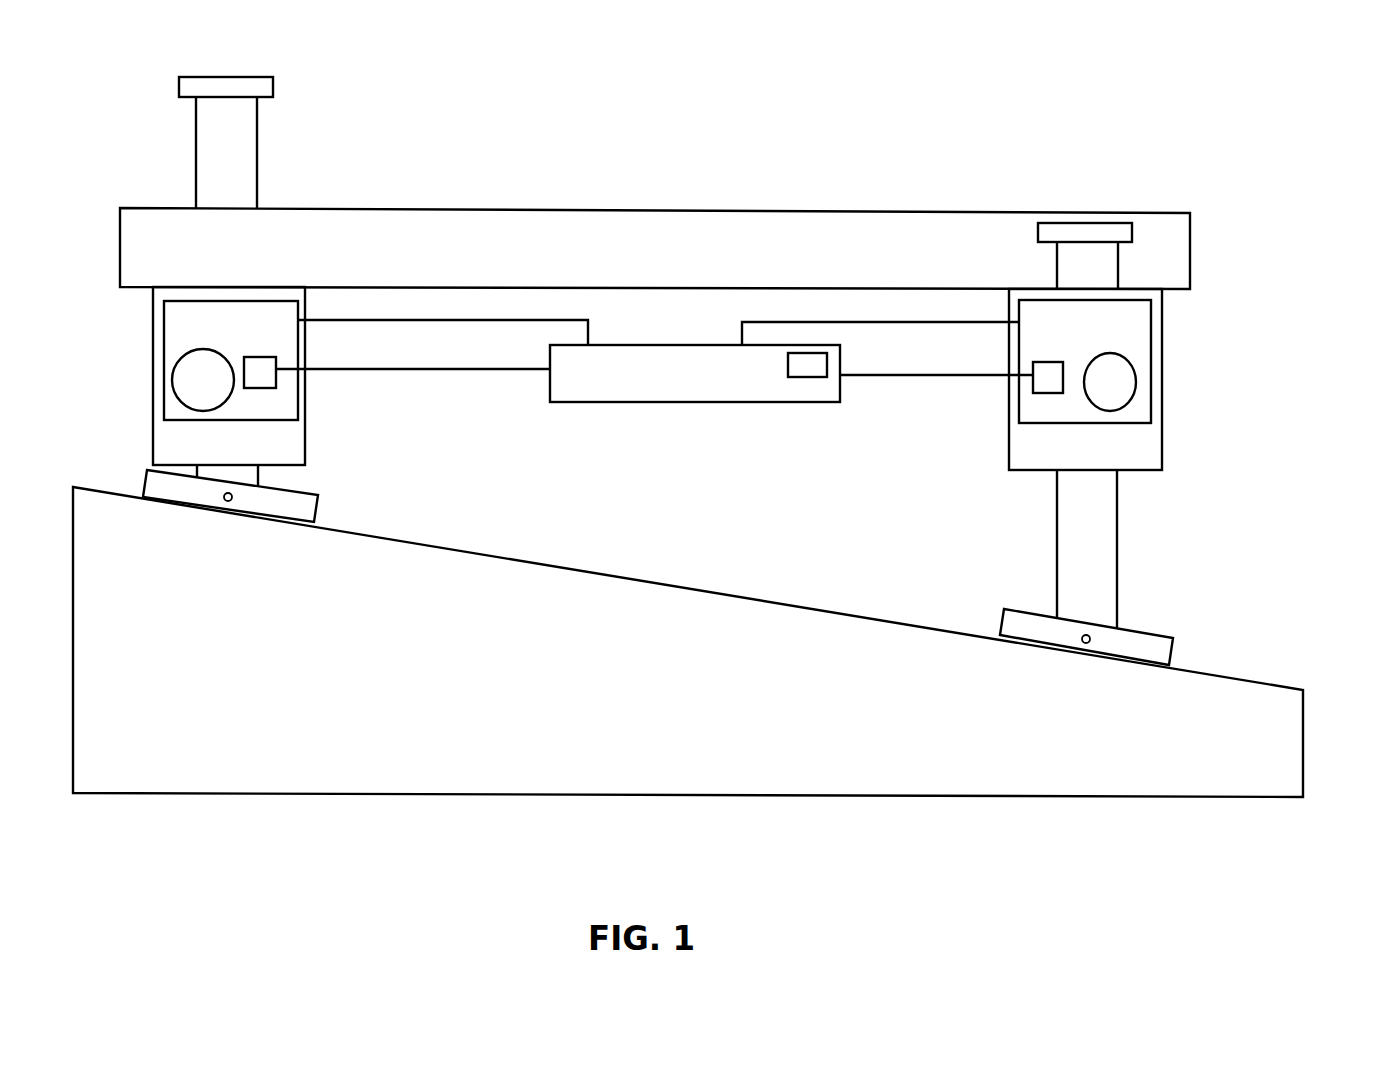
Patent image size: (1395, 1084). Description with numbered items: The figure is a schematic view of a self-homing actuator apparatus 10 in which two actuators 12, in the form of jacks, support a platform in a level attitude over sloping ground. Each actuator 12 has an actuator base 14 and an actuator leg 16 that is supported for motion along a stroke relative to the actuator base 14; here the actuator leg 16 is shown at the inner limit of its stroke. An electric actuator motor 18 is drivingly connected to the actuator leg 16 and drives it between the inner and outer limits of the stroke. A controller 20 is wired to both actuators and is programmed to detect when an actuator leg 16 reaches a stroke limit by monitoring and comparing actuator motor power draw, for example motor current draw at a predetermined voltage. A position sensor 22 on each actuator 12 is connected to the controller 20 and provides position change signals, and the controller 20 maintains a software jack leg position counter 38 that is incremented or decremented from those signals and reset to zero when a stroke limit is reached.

The self-homing actuator apparatus 10 is at (1222, 324).
The actuator 12 is at (662, 395).
The actuator base 14 is at (178, 451).
The actuator leg 16 is at (243, 474).
The electric actuator motor 18 is at (203, 360).
The controller 20 is at (706, 308).
The position sensor 22 is at (267, 369).
The jack leg position counter 38 is at (808, 360).